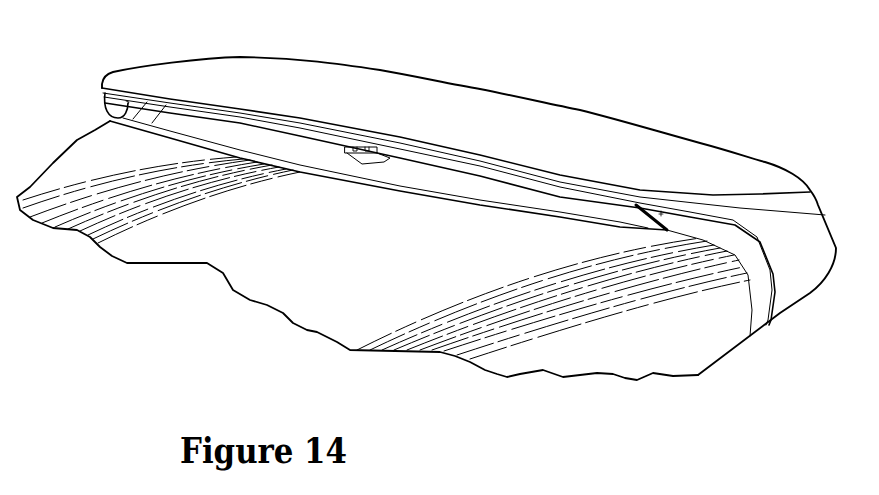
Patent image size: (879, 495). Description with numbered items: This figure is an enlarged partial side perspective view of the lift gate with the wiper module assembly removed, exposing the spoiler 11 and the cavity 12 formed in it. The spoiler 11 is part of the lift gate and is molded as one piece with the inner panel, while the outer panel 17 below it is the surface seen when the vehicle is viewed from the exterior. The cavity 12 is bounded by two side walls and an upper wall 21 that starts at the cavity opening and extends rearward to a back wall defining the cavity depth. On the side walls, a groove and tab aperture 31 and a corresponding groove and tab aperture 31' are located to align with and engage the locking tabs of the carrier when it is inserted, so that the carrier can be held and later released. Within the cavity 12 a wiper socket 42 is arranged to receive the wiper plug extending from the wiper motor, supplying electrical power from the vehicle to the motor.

The spoiler 11 is at (440, 93).
The cavity 12 is at (450, 212).
The outer panel 17 is at (267, 153).
The upper wall 21 is at (517, 182).
The groove and tab aperture 31 is at (80, 99).
The groove and tab aperture 31' is at (709, 148).
The wiper socket 42 is at (342, 151).